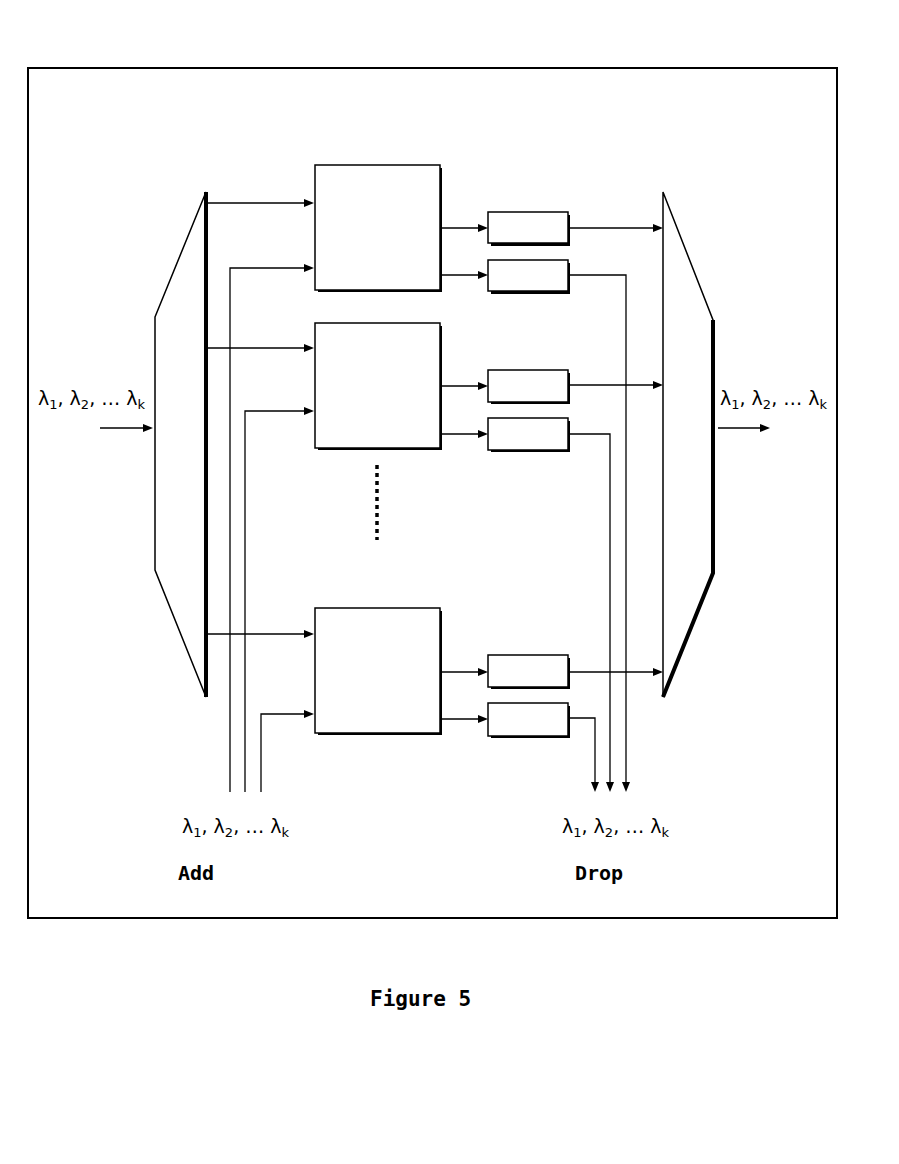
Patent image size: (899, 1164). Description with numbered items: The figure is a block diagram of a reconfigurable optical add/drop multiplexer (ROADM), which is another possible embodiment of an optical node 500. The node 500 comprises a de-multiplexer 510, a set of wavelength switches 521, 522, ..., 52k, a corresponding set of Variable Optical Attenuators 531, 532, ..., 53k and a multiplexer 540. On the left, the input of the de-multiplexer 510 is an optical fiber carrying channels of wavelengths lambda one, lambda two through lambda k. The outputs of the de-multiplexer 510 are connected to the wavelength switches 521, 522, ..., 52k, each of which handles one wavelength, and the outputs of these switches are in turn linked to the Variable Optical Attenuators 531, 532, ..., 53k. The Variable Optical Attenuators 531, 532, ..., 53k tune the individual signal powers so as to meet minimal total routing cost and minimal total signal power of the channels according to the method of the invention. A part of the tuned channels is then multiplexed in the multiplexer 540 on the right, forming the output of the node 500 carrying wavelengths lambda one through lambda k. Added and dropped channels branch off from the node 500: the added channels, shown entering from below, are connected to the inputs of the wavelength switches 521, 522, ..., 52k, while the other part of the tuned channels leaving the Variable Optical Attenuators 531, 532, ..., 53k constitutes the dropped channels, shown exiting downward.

The optical node 500 is at (441, 68).
The de-multiplexer 510 is at (165, 588).
The wavelength switch 521 is at (425, 163).
The wavelength switch 522 is at (377, 455).
The wavelength switch 52k is at (425, 607).
The variable optical attenuator 531 is at (547, 209).
The variable optical attenuator 532 is at (547, 367).
The variable optical attenuator 53k is at (548, 653).
The multiplexer 540 is at (690, 640).